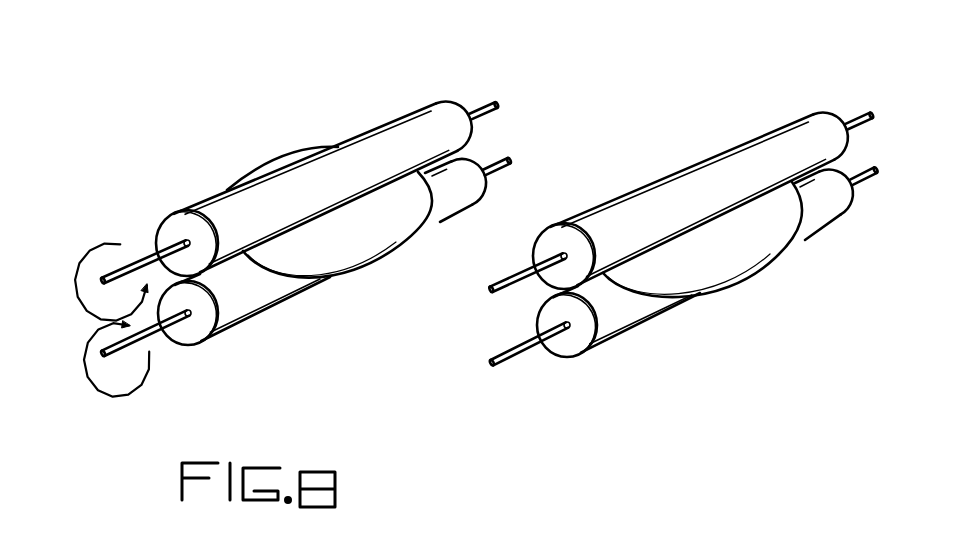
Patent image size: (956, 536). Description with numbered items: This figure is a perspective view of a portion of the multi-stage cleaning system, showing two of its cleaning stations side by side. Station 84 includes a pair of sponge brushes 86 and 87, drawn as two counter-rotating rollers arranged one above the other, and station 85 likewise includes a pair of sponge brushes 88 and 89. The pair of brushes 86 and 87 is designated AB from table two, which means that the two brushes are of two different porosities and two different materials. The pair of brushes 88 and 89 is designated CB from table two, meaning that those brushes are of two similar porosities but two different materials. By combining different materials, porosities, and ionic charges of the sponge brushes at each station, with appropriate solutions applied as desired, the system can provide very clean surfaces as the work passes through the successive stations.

The station 84 is at (388, 99).
The station 85 is at (699, 133).
The sponge brush 86 is at (451, 113).
The sponge brush 87 is at (465, 172).
The sponge brush 88 is at (832, 120).
The sponge brush 89 is at (833, 187).
The brush pair designation AB is at (295, 312).
The brush pair designation CB is at (724, 303).